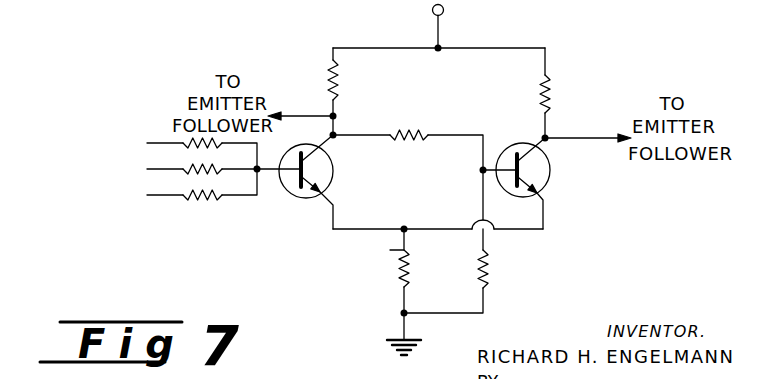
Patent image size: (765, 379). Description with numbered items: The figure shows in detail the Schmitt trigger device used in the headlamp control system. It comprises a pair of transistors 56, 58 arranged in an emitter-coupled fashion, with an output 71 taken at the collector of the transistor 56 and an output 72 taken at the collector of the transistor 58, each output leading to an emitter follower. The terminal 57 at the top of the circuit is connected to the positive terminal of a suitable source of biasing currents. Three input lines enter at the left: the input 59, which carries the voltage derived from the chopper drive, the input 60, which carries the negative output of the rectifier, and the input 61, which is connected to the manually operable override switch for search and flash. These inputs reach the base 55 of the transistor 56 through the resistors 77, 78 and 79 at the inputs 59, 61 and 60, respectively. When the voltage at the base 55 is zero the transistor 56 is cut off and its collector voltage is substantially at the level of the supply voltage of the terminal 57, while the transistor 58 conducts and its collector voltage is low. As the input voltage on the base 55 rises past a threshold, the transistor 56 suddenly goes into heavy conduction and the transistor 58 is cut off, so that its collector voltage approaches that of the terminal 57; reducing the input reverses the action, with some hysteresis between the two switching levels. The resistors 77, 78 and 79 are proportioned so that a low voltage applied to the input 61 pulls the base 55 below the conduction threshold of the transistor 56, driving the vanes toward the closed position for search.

The base 55 is at (288, 180).
The transistor 56 is at (333, 171).
The terminal 57 is at (444, 10).
The transistor 58 is at (550, 172).
The input 59 is at (151, 143).
The input 60 is at (151, 169).
The input 61 is at (151, 195).
The output 71 is at (311, 112).
The output 72 is at (566, 136).
The resistor 77 is at (200, 148).
The resistor 78 is at (200, 200).
The resistor 79 is at (200, 174).